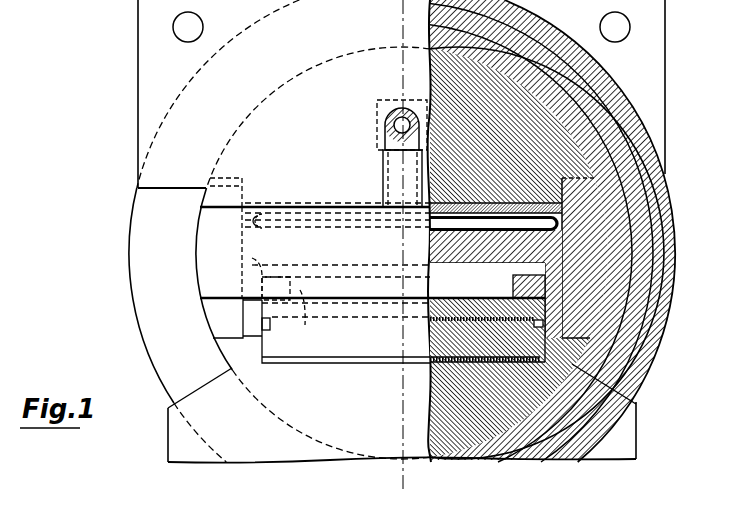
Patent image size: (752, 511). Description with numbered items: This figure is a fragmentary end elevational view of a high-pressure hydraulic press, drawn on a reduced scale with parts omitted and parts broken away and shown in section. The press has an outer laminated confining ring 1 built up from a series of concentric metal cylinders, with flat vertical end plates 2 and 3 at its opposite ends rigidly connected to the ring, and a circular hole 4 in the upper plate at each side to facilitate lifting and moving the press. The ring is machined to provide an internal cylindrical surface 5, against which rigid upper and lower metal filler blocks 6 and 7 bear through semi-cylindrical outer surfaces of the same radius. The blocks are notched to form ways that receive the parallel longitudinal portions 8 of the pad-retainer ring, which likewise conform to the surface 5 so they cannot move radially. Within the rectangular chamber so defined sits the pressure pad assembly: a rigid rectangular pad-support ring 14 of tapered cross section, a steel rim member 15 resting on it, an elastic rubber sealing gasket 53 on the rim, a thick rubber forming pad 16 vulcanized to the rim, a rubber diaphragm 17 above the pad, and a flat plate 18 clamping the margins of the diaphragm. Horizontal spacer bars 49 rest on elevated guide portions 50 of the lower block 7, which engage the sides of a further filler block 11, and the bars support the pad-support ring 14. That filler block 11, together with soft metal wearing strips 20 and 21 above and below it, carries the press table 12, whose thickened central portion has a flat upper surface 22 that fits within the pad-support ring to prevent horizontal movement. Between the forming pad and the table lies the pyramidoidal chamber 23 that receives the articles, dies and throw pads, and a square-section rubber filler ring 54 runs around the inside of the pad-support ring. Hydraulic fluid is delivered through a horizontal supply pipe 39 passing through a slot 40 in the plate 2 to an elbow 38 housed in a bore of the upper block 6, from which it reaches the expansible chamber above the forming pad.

The outer laminated confining ring 1 is at (140, 315).
The upper end plate 2 is at (150, 160).
The lower end plate 3 is at (175, 448).
The circular hole 4 is at (173, 27).
The internal cylindrical surface 5 is at (235, 140).
The upper filler block 6 is at (495, 137).
The lower filler block 7 is at (470, 392).
The longitudinal portions 8 is at (210, 272).
The filler block 11 is at (519, 362).
The press table 12 is at (494, 320).
The pad-support ring 14 is at (560, 284).
The rim member 15 is at (245, 236).
The forming pad 16 is at (438, 242).
The diaphragm 17 is at (318, 226).
The clamping plate 18 is at (507, 203).
The wearing strip 20 is at (437, 320).
The wearing strip 21 is at (470, 366).
The upper surface 22 is at (437, 285).
The pyramidoidal chamber 23 is at (462, 283).
The elbow 38 is at (385, 130).
The fluid supply pipe 39 is at (401, 112).
The slot 40 is at (388, 172).
The spacer bars 49 is at (248, 328).
The guide portions 50 is at (237, 355).
The sealing gasket 53 is at (215, 221).
The filler ring 54 is at (289, 303).